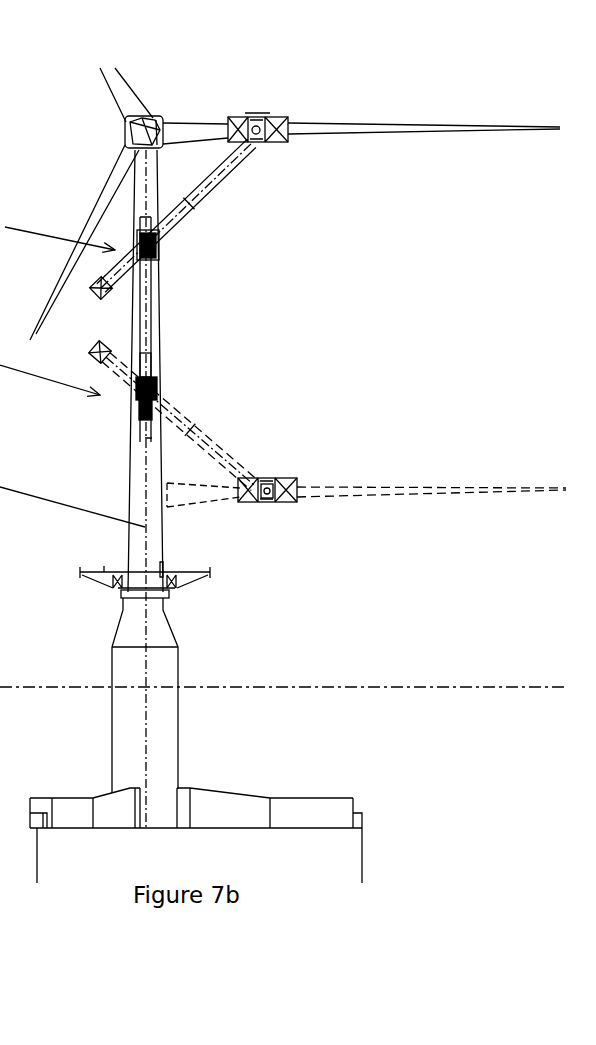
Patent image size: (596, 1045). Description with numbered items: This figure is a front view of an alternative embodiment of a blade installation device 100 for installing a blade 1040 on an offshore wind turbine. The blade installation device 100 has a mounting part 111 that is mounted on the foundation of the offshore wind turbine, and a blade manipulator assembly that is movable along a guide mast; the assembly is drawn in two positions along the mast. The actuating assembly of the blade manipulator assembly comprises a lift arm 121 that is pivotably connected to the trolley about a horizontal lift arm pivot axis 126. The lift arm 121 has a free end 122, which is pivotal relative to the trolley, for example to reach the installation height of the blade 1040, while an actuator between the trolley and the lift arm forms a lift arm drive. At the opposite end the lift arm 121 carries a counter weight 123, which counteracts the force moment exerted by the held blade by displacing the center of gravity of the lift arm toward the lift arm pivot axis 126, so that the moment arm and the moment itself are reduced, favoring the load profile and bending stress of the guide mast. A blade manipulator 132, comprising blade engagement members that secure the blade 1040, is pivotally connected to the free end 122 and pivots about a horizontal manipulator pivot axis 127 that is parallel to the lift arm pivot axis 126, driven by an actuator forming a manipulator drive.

The blade installation device 100 is at (170, 345).
The mounting part 111 is at (142, 577).
The lift arm 121 is at (212, 445).
The free end 122 is at (257, 460).
The counter weight 123 is at (93, 347).
The lift arm pivot axis 126 is at (153, 387).
The manipulator pivot axis 127 is at (288, 117).
The blade manipulator 132 is at (277, 497).
The blade 1040 is at (545, 470).